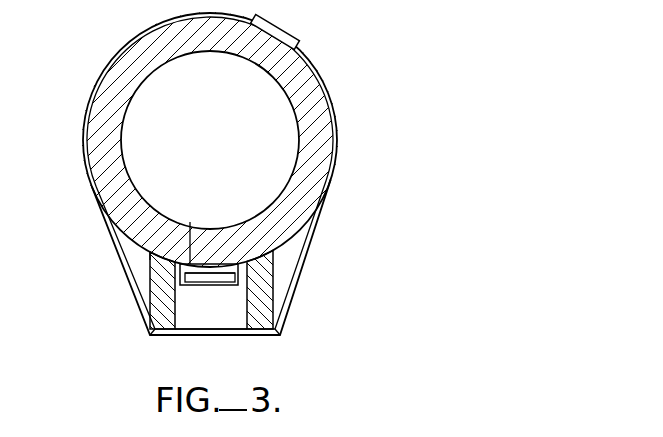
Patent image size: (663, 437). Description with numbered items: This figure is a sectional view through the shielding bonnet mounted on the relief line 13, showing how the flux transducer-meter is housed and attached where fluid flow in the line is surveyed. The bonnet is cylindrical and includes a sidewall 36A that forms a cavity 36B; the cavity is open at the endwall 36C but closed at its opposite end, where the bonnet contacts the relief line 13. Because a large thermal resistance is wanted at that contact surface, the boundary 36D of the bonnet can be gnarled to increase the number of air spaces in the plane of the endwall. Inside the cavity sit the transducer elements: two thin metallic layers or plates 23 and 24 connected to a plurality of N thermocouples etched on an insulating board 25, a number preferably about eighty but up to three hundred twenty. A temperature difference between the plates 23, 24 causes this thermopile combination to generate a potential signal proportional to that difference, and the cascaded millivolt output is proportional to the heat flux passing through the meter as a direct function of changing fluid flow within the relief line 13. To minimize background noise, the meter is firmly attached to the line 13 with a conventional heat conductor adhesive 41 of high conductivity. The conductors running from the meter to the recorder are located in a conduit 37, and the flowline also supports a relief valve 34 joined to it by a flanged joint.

The relief line 13 is at (318, 137).
The conduit 37 is at (320, 84).
The sidewall 36A is at (176, 293).
The relief valve 34 is at (273, 297).
The thin metallic plate 23 is at (238, 266).
The thin metallic plate 24 is at (203, 283).
The heat conductor adhesive 41 is at (190, 222).
The boundary 36D is at (160, 266).
The endwall 36C is at (152, 333).
The cavity 36B is at (239, 318).
The insulating board 25 is at (276, 318).